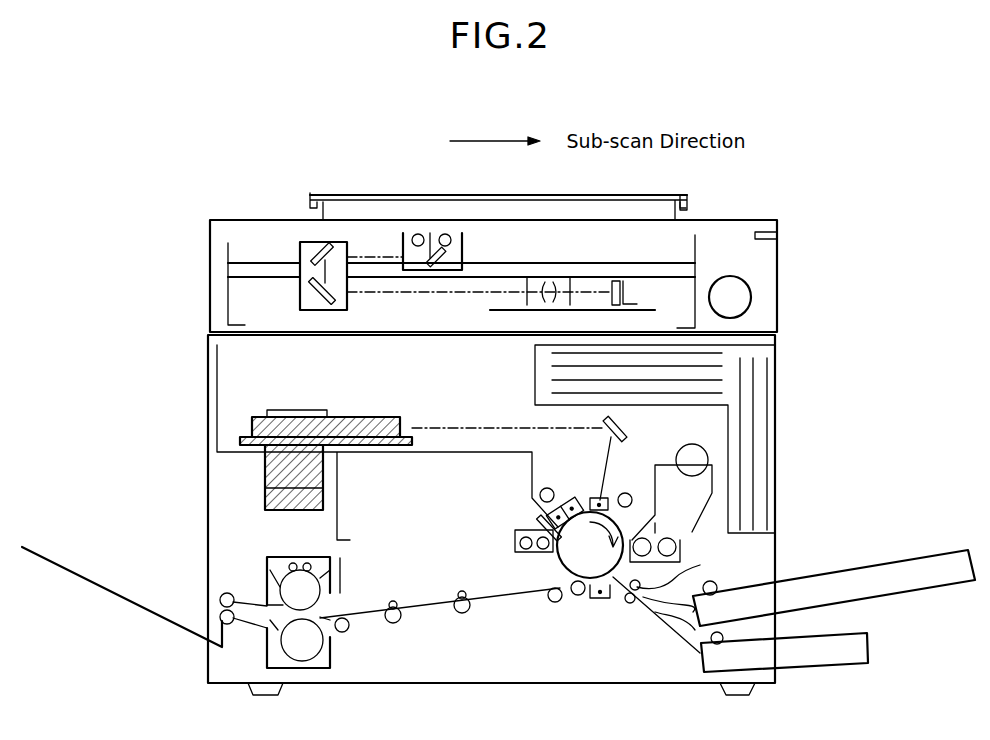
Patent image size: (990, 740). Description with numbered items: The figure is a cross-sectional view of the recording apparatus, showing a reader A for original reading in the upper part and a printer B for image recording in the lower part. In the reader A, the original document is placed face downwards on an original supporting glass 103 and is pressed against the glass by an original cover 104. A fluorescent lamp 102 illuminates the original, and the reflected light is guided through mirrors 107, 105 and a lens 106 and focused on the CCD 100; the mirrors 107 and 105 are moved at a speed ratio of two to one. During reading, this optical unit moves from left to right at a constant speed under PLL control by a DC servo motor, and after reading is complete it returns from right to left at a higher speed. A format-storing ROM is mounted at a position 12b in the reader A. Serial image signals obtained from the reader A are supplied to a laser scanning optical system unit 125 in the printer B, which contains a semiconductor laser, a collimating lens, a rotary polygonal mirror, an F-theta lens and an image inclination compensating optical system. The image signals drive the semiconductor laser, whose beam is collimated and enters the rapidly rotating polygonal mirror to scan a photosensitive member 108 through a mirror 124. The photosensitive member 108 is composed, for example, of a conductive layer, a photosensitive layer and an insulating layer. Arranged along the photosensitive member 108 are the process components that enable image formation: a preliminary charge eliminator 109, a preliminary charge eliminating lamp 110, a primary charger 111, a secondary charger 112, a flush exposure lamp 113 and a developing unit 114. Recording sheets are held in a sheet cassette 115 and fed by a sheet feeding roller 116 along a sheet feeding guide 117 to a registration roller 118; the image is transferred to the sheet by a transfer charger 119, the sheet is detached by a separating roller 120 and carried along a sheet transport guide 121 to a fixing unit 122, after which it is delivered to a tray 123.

The reader A is at (765, 262).
The printer B is at (775, 412).
The position of format-storing ROM 12b is at (777, 235).
The CCD 100 is at (647, 294).
The fluorescent lamp 102 is at (445, 233).
The original supporting glass 103 is at (573, 218).
The original cover 104 is at (667, 193).
The mirror 105 is at (318, 246).
The lens 106 is at (550, 284).
The mirror 107 is at (443, 264).
The photosensitive member 108 is at (562, 573).
The preliminary charge eliminator 109 is at (560, 503).
The preliminary charge eliminating lamp 110 is at (546, 488).
The primary charger 111 is at (583, 496).
The secondary charger 112 is at (605, 497).
The flush exposure lamp 113 is at (631, 495).
The developing unit 114 is at (680, 523).
The sheet cassette 115 is at (768, 582).
The sheet feeding roller 116 is at (714, 581).
The sheet feeding guide 117 is at (657, 614).
The registration roller 118 is at (629, 604).
The transfer charger 119 is at (597, 600).
The separating roller 120 is at (573, 598).
The sheet transport guide 121 is at (481, 610).
The fixing unit 122 is at (320, 580).
The tray 123 is at (126, 596).
The mirror 124 is at (623, 419).
The laser scanning optical system unit 125 is at (377, 418).